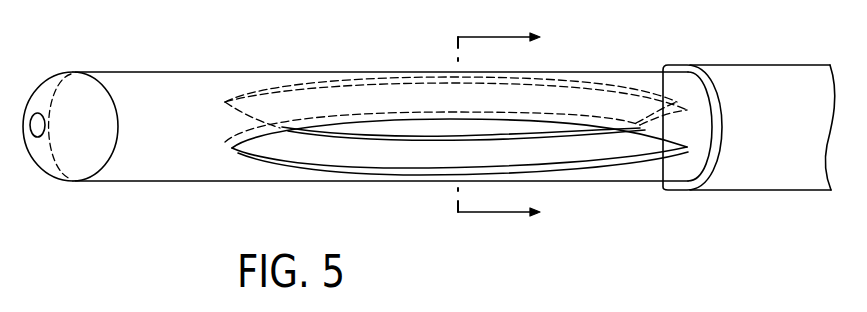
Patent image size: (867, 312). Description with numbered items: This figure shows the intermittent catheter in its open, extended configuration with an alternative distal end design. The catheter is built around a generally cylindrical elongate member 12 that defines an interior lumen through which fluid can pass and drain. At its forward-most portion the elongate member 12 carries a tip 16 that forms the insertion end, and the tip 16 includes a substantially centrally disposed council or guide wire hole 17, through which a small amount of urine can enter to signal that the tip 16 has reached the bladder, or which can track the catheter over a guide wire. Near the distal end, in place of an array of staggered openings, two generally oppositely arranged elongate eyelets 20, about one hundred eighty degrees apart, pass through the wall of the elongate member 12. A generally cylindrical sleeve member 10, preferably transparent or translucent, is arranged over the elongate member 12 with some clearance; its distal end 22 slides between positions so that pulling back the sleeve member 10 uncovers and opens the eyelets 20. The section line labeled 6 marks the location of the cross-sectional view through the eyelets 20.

The sleeve member 10 is at (777, 73).
The elongate member 12 is at (181, 88).
The tip 16 is at (66, 100).
The council or guide wire hole 17 is at (33, 135).
The elongate eyelets 20 is at (388, 158).
The distal end of the sleeve member 22 is at (676, 68).
The section line 6- 6 is at (499, 127).